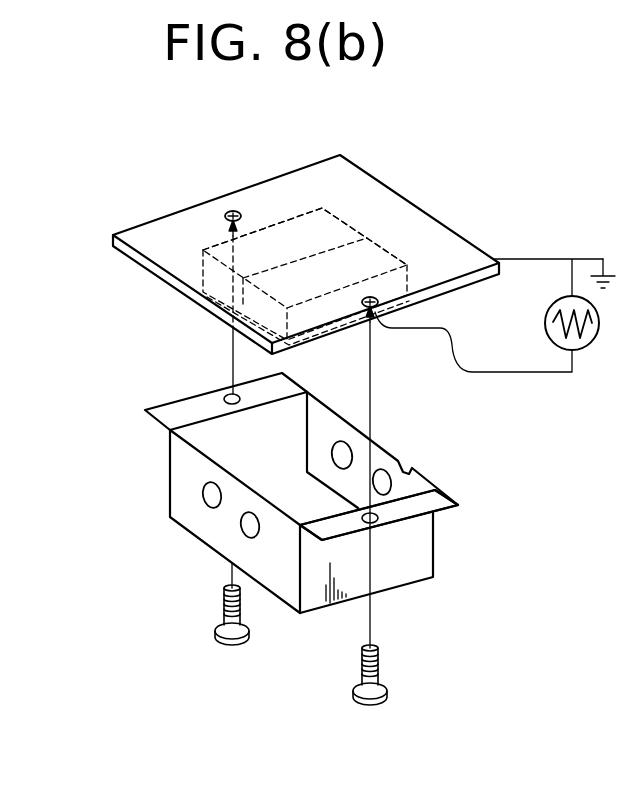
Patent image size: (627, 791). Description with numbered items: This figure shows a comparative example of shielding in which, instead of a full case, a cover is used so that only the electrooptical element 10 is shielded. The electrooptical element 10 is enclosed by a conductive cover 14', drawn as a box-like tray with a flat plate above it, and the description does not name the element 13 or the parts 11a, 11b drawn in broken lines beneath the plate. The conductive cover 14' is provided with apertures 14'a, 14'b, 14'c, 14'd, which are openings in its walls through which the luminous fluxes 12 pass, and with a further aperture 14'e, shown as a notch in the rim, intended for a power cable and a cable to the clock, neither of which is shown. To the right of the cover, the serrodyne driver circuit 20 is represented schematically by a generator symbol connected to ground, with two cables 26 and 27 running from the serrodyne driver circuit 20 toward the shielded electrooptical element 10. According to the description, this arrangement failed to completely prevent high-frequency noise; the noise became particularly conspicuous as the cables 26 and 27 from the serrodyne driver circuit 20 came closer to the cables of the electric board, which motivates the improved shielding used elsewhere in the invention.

The electrooptical element 10 is at (387, 192).
The luminous fluxes 12 is at (208, 210).
The piezoelectric element 13 is at (197, 310).
The upper electrode 11a is at (203, 275).
The lower electrode 11b is at (227, 345).
The conductive cover 14' is at (301, 485).
The aperture 14'a is at (162, 519).
The aperture 14'b is at (187, 551).
The aperture 14'c is at (336, 414).
The aperture 14'd is at (410, 524).
The aperture 14'e is at (412, 455).
The serrodyne driver circuit 20 is at (495, 311).
The cable 26 is at (537, 258).
The cable 27 is at (537, 374).